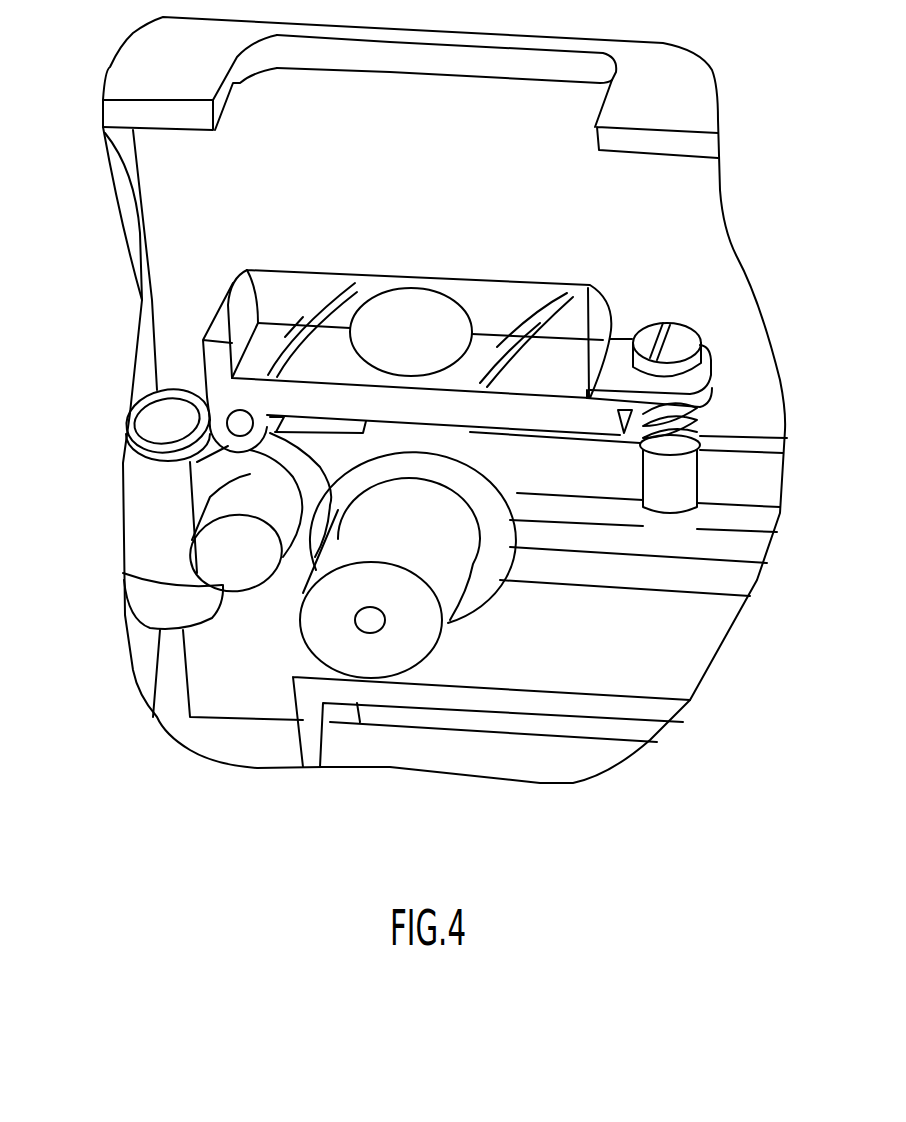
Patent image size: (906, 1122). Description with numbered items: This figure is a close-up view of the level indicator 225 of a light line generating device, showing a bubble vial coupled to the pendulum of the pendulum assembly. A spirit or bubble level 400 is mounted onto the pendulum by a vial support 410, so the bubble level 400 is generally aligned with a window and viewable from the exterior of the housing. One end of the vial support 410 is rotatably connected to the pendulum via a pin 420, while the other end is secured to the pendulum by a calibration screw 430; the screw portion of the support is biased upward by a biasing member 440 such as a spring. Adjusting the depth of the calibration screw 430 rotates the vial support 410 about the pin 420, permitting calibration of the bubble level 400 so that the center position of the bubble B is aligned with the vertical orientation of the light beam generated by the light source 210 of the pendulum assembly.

The level indicator 225 is at (607, 264).
The bubble level 400 is at (490, 297).
The bubble B is at (408, 303).
The vial support 410 is at (200, 412).
The pin 420 is at (190, 467).
The calibration screw 430 is at (683, 340).
The biasing member 440 is at (693, 428).
The light source 210 is at (423, 538).